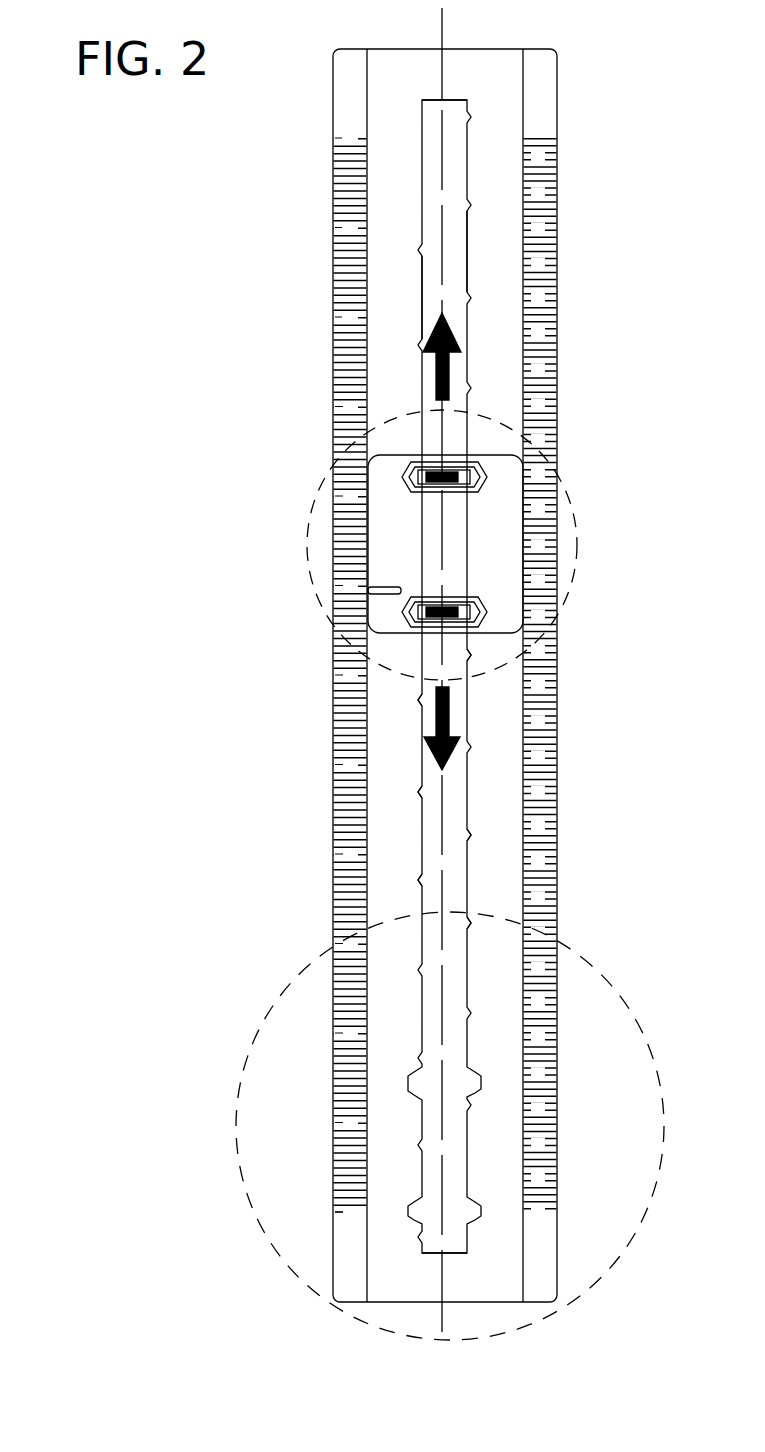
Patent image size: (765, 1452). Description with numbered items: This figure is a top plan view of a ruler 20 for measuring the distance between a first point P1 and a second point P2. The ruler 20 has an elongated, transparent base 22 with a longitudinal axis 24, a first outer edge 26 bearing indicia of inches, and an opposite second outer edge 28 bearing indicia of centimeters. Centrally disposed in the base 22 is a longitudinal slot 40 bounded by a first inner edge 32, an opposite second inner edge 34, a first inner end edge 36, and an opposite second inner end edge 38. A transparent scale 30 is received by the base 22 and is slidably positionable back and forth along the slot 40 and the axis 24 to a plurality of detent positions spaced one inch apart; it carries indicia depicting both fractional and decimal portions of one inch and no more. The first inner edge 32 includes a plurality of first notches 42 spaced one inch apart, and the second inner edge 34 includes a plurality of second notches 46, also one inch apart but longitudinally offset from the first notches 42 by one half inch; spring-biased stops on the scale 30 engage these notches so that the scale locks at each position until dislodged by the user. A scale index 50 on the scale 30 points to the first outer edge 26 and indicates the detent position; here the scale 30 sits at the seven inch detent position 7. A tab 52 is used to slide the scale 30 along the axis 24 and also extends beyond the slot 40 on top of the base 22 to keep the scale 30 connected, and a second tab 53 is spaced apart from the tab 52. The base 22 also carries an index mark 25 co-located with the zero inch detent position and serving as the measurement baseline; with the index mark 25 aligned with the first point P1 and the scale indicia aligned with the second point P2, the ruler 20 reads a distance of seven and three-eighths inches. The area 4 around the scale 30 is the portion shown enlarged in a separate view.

The ruler 20 is at (612, 90).
The elongated base 22 is at (333, 80).
The longitudinal axis 24 is at (442, 35).
The index mark 25 is at (340, 1212).
The first outer edge 26 is at (333, 355).
The second outer edge 28 is at (557, 358).
The scale 30 is at (370, 457).
The first inner edge 32 is at (422, 273).
The second inner edge 34 is at (467, 263).
The first inner end edge 36 is at (442, 101).
The second inner end edge 38 is at (448, 1252).
The longitudinal slot 40 is at (432, 897).
The first notches 42 is at (422, 880).
The second notches 46 is at (467, 923).
The scale index 50 is at (368, 591).
The tab 52 is at (487, 611).
The second tab 53 is at (487, 476).
The area 4 is at (316, 492).
The seven inch detent position 7 is at (283, 995).
The first point P1 is at (330, 1206).
The second point P2 is at (326, 555).